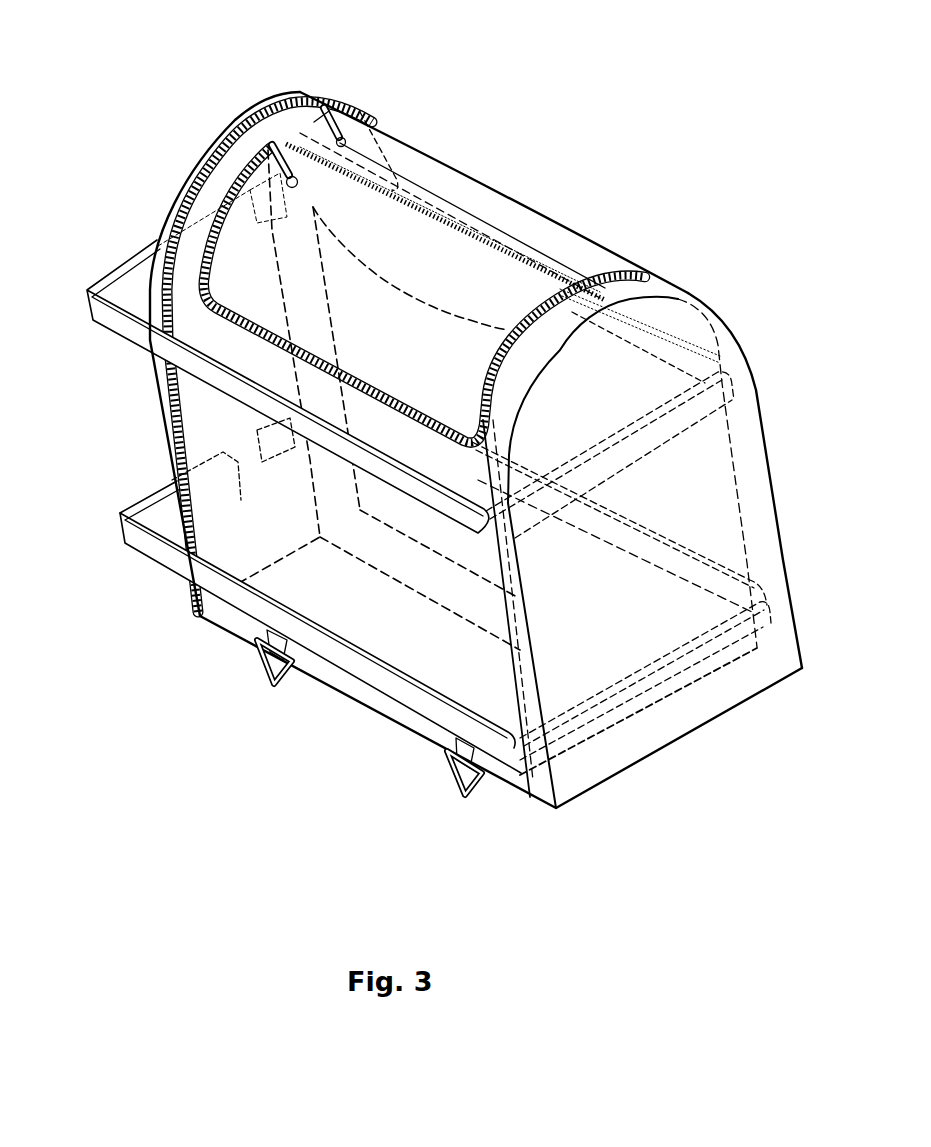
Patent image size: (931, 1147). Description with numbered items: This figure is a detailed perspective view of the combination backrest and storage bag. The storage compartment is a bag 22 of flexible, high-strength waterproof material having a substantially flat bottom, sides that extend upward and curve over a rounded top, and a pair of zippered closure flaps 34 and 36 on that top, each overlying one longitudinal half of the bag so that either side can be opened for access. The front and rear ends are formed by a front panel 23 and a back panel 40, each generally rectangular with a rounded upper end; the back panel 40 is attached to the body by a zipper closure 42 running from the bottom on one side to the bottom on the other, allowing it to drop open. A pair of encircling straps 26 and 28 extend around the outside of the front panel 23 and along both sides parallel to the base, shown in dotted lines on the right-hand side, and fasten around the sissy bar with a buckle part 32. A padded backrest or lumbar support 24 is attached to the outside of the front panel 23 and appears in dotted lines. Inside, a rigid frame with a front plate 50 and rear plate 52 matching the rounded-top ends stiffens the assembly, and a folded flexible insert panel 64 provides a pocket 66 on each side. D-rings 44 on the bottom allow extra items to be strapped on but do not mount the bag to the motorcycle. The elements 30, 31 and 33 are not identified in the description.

The bag 22 is at (634, 240).
The front panel 23 is at (530, 795).
The padded backrest or lumbar support 24 is at (755, 428).
The encircling strap 26 is at (137, 340).
The encircling strap 28 is at (167, 557).
The front panel 30 is at (190, 230).
The pocket 31 is at (231, 473).
The buckle part 32 is at (272, 192).
The pocket 33 is at (257, 433).
The zippered closure flap 34 is at (538, 212).
The zippered closure flap 36 is at (448, 257).
The back panel 40 is at (258, 110).
The zipper closure 42 is at (206, 160).
The D-ring 44 is at (270, 686).
The front plate 50 is at (502, 679).
The rear plate 52 is at (268, 553).
The insert panel 64 is at (393, 568).
The pocket 66 is at (415, 300).